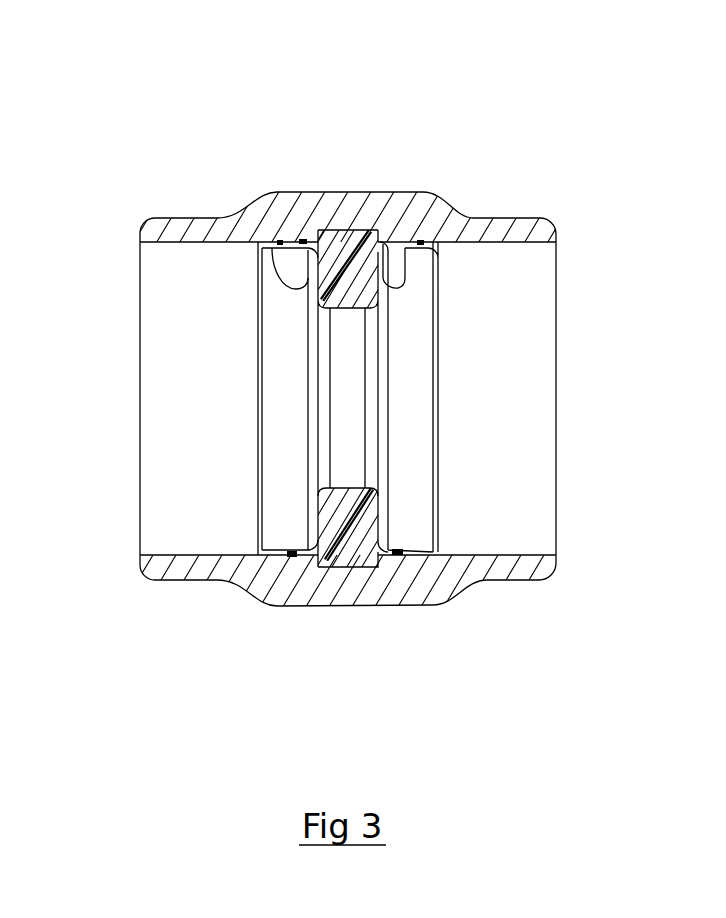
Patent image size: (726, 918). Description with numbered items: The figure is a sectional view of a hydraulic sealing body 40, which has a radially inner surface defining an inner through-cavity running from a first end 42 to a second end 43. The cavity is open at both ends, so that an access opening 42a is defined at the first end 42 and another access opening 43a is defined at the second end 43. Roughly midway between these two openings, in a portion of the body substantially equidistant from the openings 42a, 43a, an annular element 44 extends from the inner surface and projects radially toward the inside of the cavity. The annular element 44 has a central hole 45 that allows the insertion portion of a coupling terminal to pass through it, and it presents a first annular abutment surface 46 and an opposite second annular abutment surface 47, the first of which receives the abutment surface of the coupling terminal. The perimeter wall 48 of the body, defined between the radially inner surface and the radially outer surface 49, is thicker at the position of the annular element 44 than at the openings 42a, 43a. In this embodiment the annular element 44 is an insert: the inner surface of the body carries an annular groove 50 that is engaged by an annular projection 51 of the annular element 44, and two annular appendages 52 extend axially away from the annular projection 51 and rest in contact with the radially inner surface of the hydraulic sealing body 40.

The hydraulic sealing body 40 is at (488, 163).
The first end 42 is at (175, 218).
The second end 43 is at (538, 212).
The access opening 42a is at (155, 388).
The access opening 43a is at (548, 423).
The annular element 44 is at (305, 545).
The central hole 45 is at (343, 398).
The first annular abutment surface 46 is at (272, 248).
The second annular abutment surface 47 is at (421, 242).
The perimeter wall 48 is at (418, 578).
The radially outer surface 49 is at (357, 192).
The annular groove 50 is at (355, 565).
The annular projection 51 is at (335, 562).
The annular appendages 52 is at (300, 240).